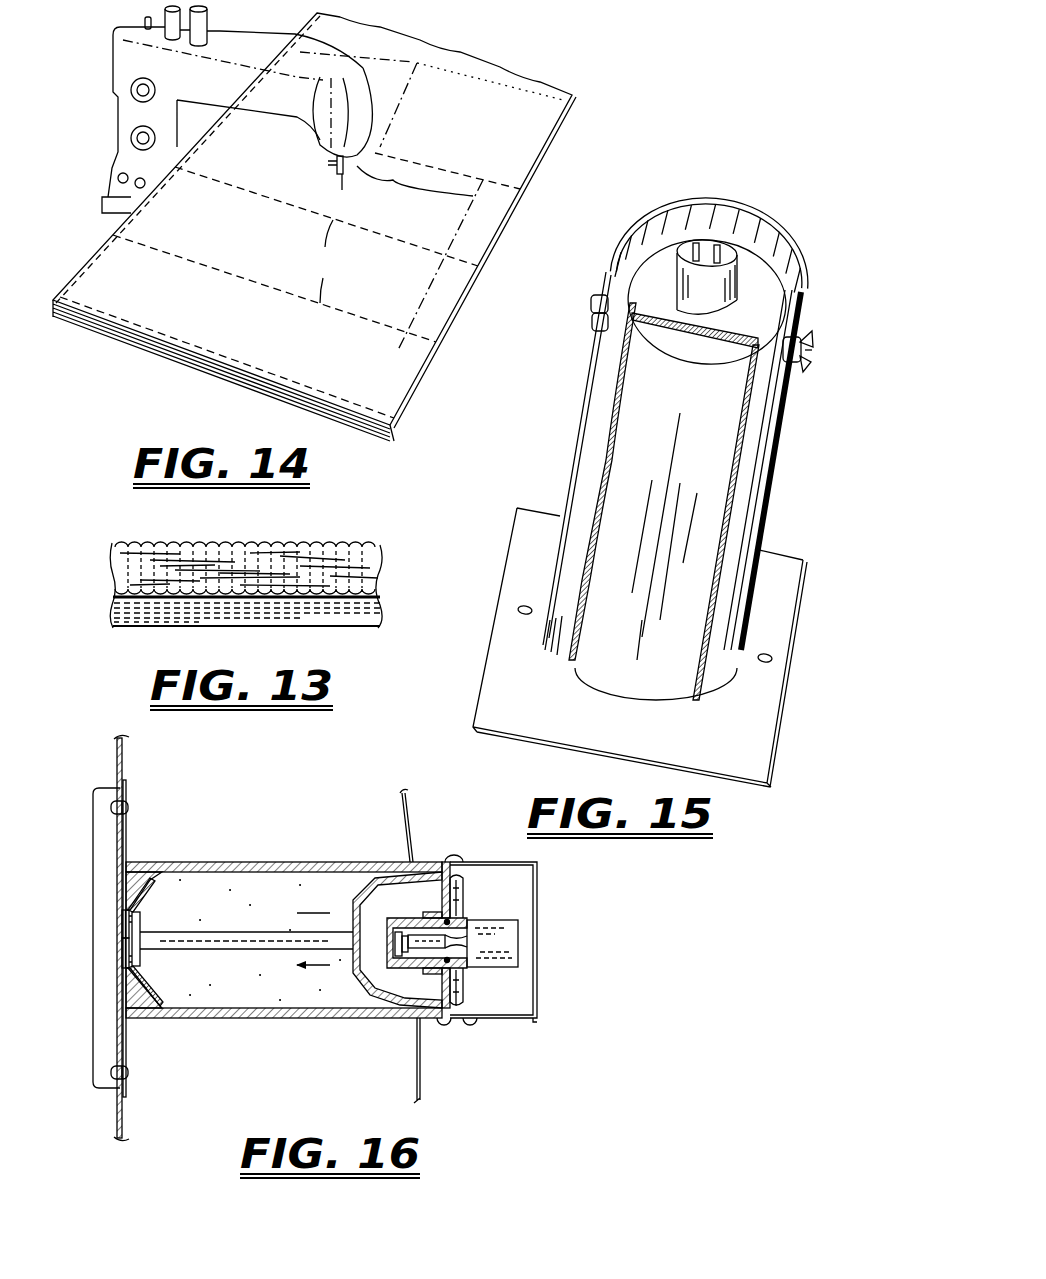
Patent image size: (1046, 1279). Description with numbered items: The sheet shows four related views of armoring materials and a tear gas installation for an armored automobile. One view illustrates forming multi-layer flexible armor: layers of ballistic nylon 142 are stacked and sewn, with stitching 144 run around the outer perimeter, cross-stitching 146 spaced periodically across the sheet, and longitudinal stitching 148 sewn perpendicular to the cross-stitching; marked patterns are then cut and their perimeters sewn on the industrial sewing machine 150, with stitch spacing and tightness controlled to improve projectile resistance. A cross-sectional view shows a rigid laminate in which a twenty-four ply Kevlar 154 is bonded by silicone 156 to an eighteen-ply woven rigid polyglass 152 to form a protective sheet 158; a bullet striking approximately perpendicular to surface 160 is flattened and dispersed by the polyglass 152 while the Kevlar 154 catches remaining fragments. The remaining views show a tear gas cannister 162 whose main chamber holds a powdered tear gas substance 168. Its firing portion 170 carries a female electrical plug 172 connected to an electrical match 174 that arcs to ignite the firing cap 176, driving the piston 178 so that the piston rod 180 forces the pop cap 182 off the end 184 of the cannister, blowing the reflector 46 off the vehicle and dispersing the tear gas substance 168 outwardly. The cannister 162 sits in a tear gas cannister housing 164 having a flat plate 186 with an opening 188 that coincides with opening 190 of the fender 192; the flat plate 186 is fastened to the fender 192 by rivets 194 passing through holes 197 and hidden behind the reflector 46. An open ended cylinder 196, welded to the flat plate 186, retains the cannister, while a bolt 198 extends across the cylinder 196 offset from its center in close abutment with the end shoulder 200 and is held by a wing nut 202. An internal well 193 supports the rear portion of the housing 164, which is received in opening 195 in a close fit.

In FIG. 16, the reflector 46 is at (93, 1040).
In FIG. 14, the ballistic nylon 142 is at (130, 353).
In FIG. 14, the stitching 144 is at (240, 360).
In FIG. 14, the cross-stitching 146 is at (295, 254).
In FIG. 14, the longitudinal stitching 148 is at (400, 183).
In FIG. 14, the industrial sewing machine 150 is at (259, 101).
In FIG. 13, the 18-ply woven rigid polyglass 152 is at (112, 612).
In FIG. 13, the 24-ply Kevlar 154 is at (362, 558).
In FIG. 13, the silicone 156 is at (360, 596).
In FIG. 13, the protective sheet 158 is at (140, 635).
In FIG. 13, the surface 160 is at (290, 628).
In FIG. 15, the tear gas cannister 162 is at (750, 257).
In FIG. 16, the tear gas cannister 162 is at (458, 1007).
In FIG. 15, the tear gas cannister housing 164 is at (723, 197).
In FIG. 16, the tear gas cannister housing 164 is at (543, 893).
In FIG. 16, the powdered tear gas substance 168 is at (186, 911).
In FIG. 16, the firing portion 170 is at (428, 905).
In FIG. 15, the female electrical plug 172 is at (732, 300).
In FIG. 16, the female electrical plug 172 is at (490, 967).
In FIG. 16, the electrical match 174 is at (412, 935).
In FIG. 16, the firing cap 176 is at (418, 966).
In FIG. 16, the piston 178 is at (352, 976).
In FIG. 16, the piston rod 180 is at (268, 930).
In FIG. 16, the pop cap 182 is at (140, 960).
In FIG. 16, the end 184 is at (140, 990).
In FIG. 15, the flat plate 186 is at (634, 737).
In FIG. 16, the flat plate 186 is at (125, 790).
In FIG. 16, the opening 188 is at (121, 911).
In FIG. 16, the opening 190 is at (119, 969).
In FIG. 16, the fender 192 is at (117, 1127).
In FIG. 16, the internal well 193 is at (416, 1073).
In FIG. 16, the rivets 194 is at (128, 808).
In FIG. 16, the opening 195 is at (410, 858).
In FIG. 16, the open ended cylinder 196 is at (513, 1020).
In FIG. 15, the holes 197 is at (762, 665).
In FIG. 15, the bolt 198 is at (657, 322).
In FIG. 16, the bolt 198 is at (462, 900).
In FIG. 16, the end shoulder 200 is at (450, 878).
In FIG. 15, the wing nut 202 is at (795, 365).
In FIG. 16, the wing nut 202 is at (446, 1026).